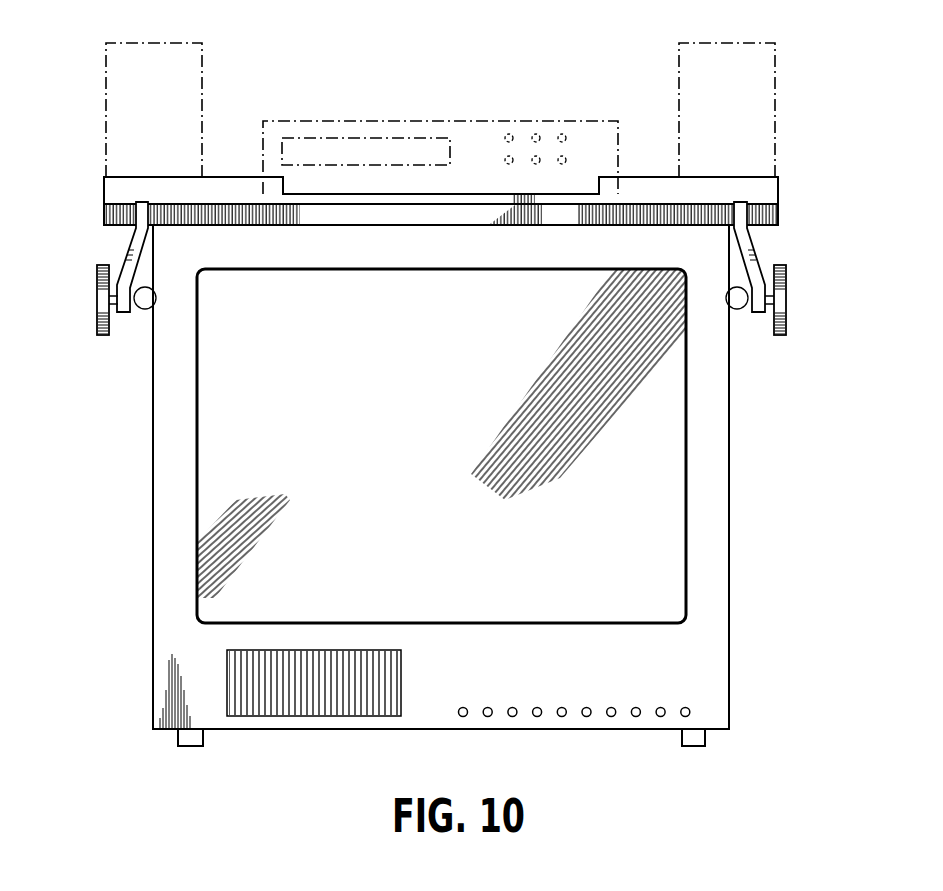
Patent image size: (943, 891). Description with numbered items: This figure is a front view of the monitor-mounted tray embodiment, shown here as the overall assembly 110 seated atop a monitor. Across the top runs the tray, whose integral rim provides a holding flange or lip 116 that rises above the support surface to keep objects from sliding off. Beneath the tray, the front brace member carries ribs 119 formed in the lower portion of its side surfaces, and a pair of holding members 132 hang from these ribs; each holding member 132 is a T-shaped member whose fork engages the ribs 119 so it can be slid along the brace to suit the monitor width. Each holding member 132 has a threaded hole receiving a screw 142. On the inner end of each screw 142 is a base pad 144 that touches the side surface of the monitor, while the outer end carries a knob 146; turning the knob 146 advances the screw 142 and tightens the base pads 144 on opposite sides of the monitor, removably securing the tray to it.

The display apparatus 110 is at (788, 173).
The holding flange or lip 116 is at (112, 188).
The ribs 119 is at (778, 210).
The holding member 132 is at (128, 312).
The screw 142 is at (138, 316).
The base pad 144 is at (734, 318).
The knob 146 is at (100, 297).